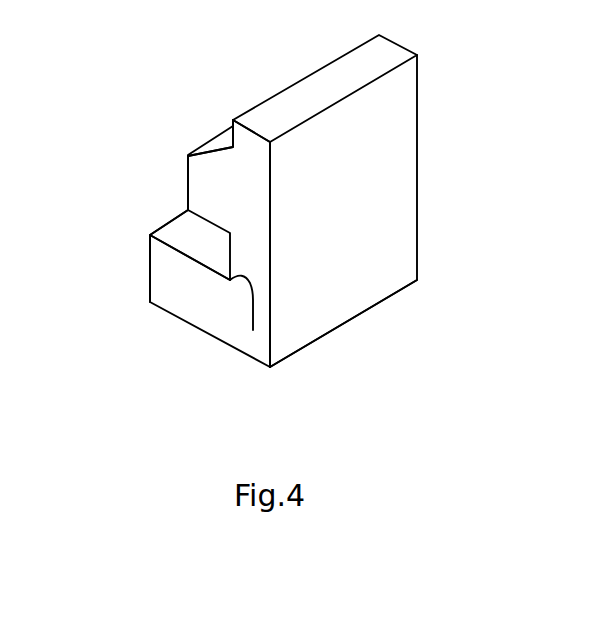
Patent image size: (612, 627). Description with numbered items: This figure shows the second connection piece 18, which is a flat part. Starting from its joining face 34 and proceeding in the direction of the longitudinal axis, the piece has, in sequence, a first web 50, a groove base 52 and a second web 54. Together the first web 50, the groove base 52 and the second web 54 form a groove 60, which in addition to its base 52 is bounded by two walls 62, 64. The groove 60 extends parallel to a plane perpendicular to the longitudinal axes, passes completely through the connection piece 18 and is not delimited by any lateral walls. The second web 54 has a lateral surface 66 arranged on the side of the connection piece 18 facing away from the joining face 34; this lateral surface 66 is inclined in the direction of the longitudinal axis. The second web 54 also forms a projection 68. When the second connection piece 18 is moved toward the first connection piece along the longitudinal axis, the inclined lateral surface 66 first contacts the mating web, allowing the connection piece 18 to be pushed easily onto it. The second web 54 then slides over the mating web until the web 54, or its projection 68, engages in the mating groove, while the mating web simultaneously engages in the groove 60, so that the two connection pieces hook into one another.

The second connection piece 18 is at (160, 100).
The first web 50 is at (202, 305).
The second web 54 is at (232, 197).
The lateral surface 66 is at (220, 135).
The projection 68 is at (205, 185).
The wall 64 is at (187, 197).
The wall 62 is at (175, 252).
The groove 60 is at (203, 258).
The groove base 52 is at (253, 330).
The joining face 34 is at (322, 345).